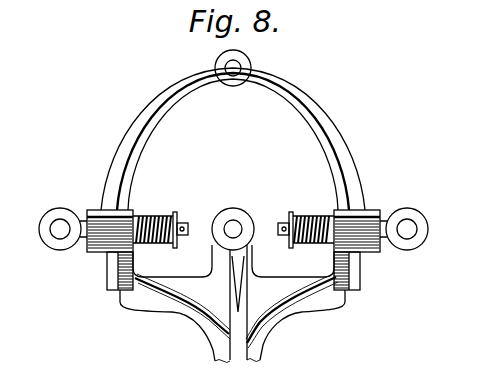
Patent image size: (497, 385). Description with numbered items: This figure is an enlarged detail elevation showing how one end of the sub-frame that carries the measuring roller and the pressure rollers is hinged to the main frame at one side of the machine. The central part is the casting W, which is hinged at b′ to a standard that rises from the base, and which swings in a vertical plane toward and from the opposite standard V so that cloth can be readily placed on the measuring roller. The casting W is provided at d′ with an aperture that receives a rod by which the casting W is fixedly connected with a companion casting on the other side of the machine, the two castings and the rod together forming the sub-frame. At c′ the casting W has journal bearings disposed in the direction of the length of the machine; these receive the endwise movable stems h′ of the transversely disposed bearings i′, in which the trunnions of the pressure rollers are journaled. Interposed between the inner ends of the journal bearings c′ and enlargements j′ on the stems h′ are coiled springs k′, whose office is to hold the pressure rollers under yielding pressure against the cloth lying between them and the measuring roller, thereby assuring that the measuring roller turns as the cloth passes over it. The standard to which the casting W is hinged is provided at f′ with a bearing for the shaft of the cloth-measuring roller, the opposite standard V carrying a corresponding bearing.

The casting W is at (330, 128).
The aperture d′ is at (232, 71).
The transversely disposed bearings i′ is at (57, 237).
The journal bearings c′ is at (100, 215).
The hinge b′ is at (108, 268).
The coiled springs k′ is at (143, 217).
The enlargements j′ is at (173, 242).
The endwise movable stems h′ is at (182, 223).
The bearing f′ is at (233, 224).
The standard V is at (214, 317).